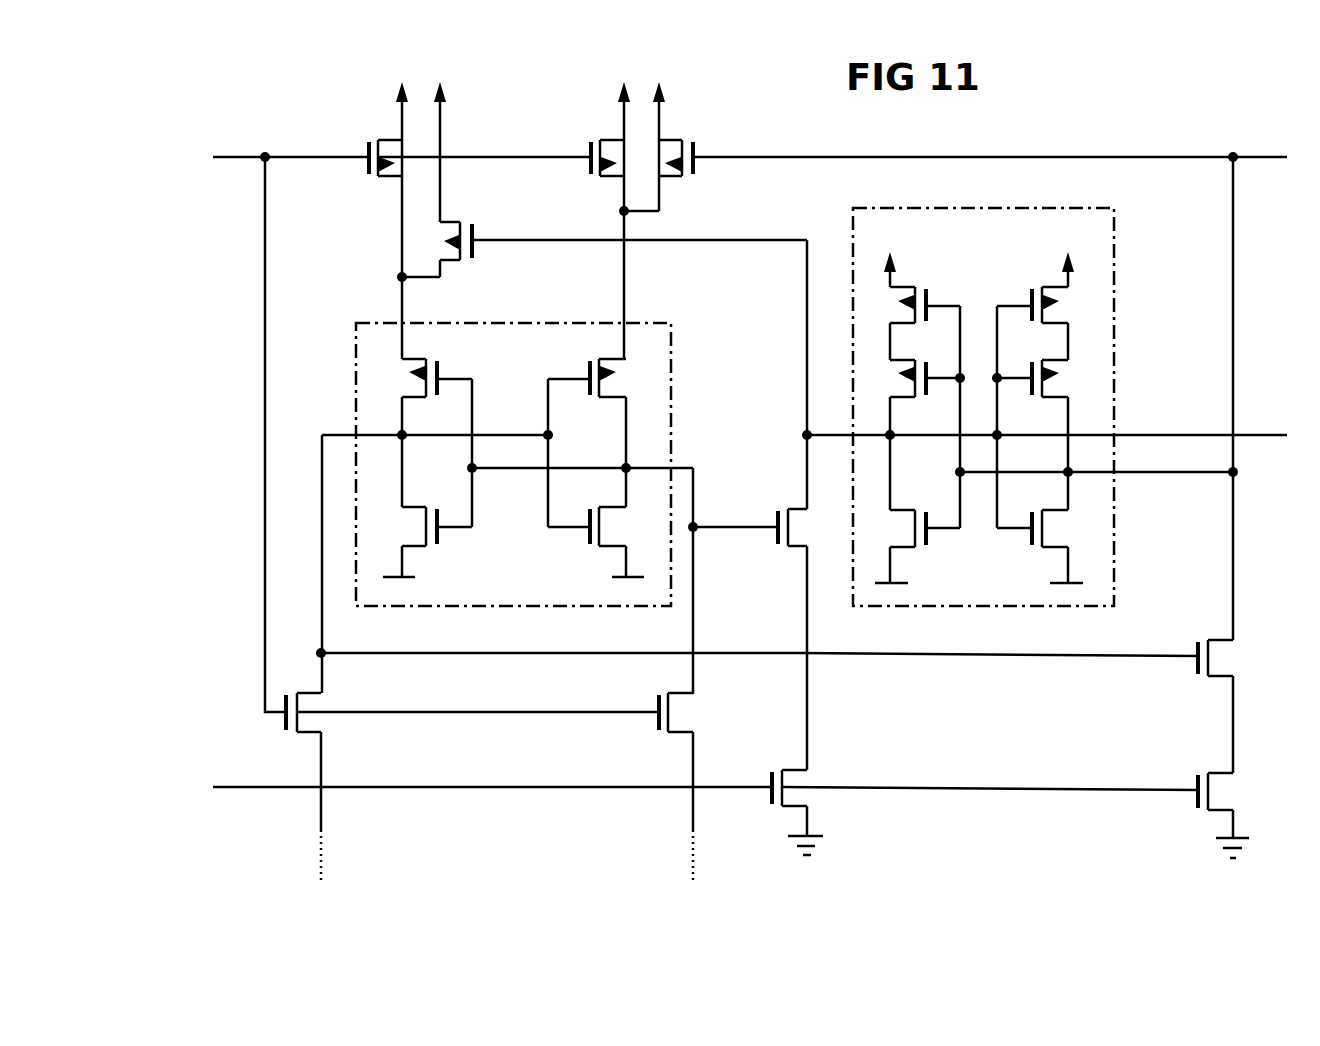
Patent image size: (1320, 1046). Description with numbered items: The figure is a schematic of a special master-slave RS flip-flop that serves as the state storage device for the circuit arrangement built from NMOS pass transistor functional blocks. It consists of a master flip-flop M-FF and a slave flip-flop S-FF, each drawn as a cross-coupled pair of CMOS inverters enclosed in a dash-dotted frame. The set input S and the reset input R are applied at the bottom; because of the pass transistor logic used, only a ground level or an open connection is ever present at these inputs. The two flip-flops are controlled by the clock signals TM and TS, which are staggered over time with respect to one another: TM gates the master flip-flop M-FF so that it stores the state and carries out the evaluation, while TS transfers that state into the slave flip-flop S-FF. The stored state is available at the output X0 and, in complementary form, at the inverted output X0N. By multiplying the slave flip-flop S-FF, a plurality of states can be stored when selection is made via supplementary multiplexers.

The master flip-flop M-FF is at (663, 350).
The slave flip-flop S-FF is at (1092, 267).
The master clock signal TM is at (270, 161).
The slave clock signal TS is at (686, 791).
The set input S is at (334, 812).
The reset input R is at (678, 812).
The output X0 is at (1061, 440).
The inverted output X0N is at (1312, 136).